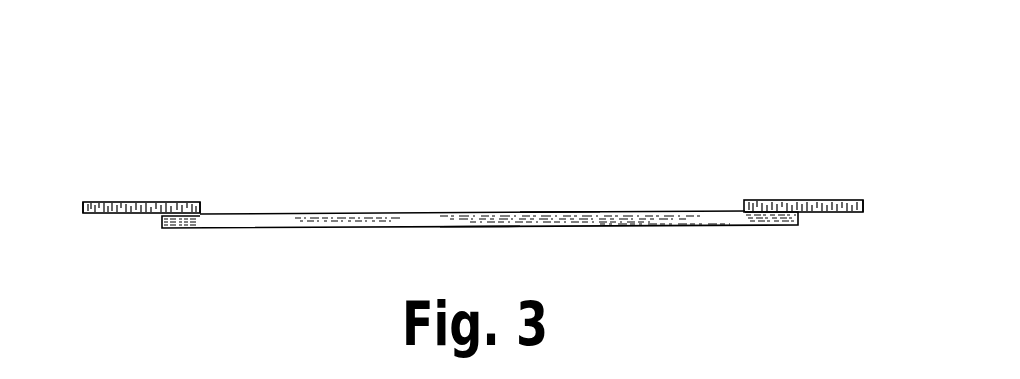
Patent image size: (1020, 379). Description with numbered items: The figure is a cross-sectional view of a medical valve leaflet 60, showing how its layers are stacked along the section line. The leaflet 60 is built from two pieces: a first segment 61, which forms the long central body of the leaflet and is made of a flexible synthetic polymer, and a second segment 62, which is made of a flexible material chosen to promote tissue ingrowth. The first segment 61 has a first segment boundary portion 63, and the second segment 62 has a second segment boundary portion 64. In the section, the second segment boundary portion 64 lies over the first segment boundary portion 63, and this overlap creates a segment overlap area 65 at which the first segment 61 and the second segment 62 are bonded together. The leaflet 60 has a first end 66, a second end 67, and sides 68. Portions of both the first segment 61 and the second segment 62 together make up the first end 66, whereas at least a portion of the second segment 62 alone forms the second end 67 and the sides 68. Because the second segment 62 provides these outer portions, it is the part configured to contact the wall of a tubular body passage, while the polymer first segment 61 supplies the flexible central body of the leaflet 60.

The medical valve leaflet 60 is at (268, 46).
The first segment 61 is at (390, 221).
The second segment 62 is at (118, 204).
The first segment boundary portion 63 is at (176, 228).
The second segment boundary portion 64 is at (185, 204).
The segment overlap area 65 is at (767, 226).
The first end 66 is at (473, 221).
The second end 67 is at (547, 203).
The sides 68 is at (83, 207).